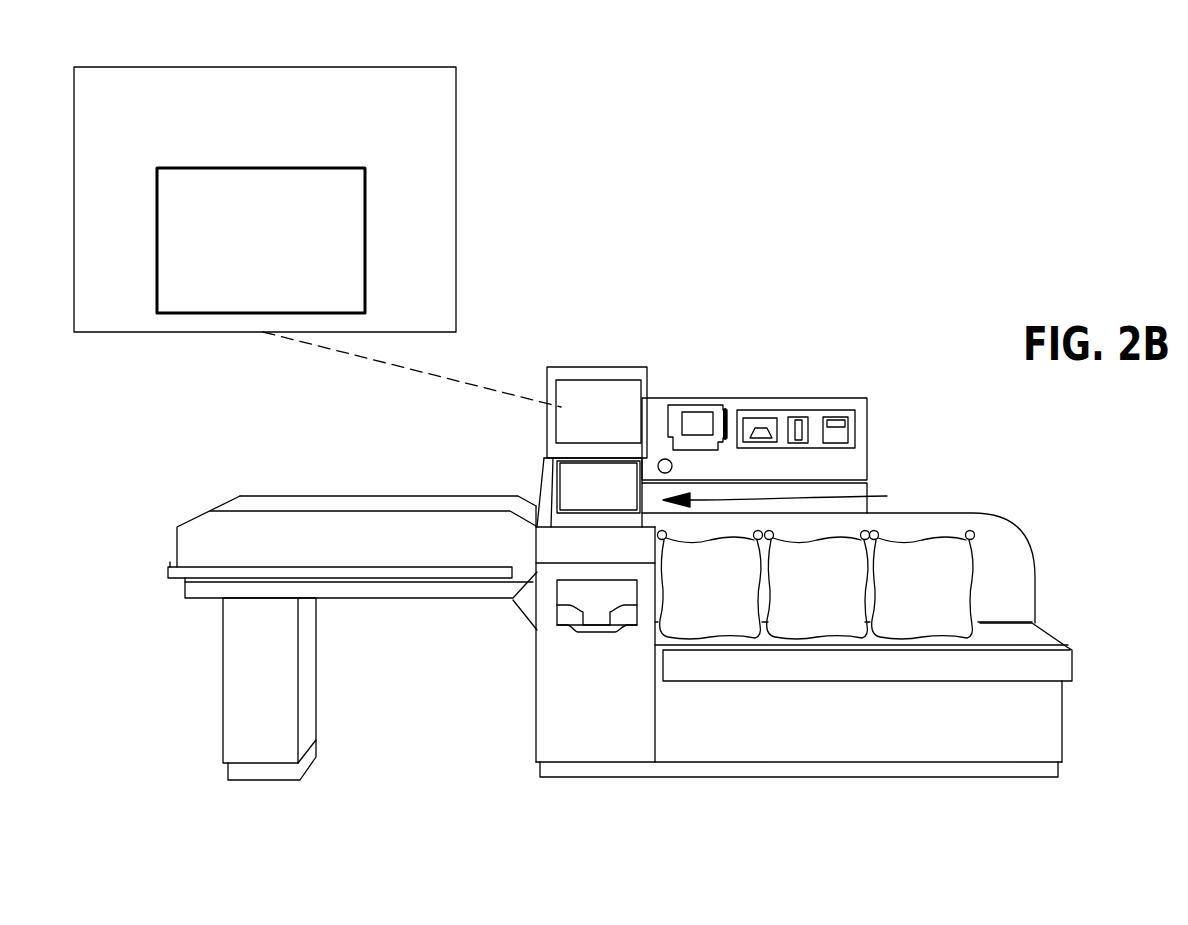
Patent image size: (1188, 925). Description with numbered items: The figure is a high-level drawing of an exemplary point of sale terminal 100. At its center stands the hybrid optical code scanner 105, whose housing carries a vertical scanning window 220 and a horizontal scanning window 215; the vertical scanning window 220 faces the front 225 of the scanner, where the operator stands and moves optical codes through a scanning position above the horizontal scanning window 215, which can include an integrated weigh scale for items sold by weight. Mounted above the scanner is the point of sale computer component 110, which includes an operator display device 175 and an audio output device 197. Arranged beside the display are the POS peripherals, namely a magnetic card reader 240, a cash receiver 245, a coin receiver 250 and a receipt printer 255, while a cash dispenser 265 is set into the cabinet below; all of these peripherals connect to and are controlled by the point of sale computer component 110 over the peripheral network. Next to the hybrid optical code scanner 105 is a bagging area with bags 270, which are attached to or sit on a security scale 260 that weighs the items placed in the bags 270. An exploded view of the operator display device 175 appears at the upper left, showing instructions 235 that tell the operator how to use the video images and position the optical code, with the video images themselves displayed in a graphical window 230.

The point of sale terminal 100 is at (940, 108).
The hybrid optical code scanner 105 is at (867, 496).
The point of sale computer component 110 is at (601, 330).
The operator display device 175 is at (127, 67).
The audio output device 197 is at (663, 457).
The horizontal scanning window 215 is at (580, 522).
The vertical scanning window 220 is at (578, 480).
The front 225 is at (578, 548).
The graphical window 230 is at (157, 240).
The instructions 235 is at (267, 108).
The magnetic card reader 240 is at (710, 407).
The cash receiver 245 is at (767, 417).
The coin receiver 250 is at (800, 417).
The receipt printer 255 is at (848, 423).
The security scale 260 is at (1048, 630).
The cash dispenser 265 is at (562, 640).
The bags 270 is at (705, 613).